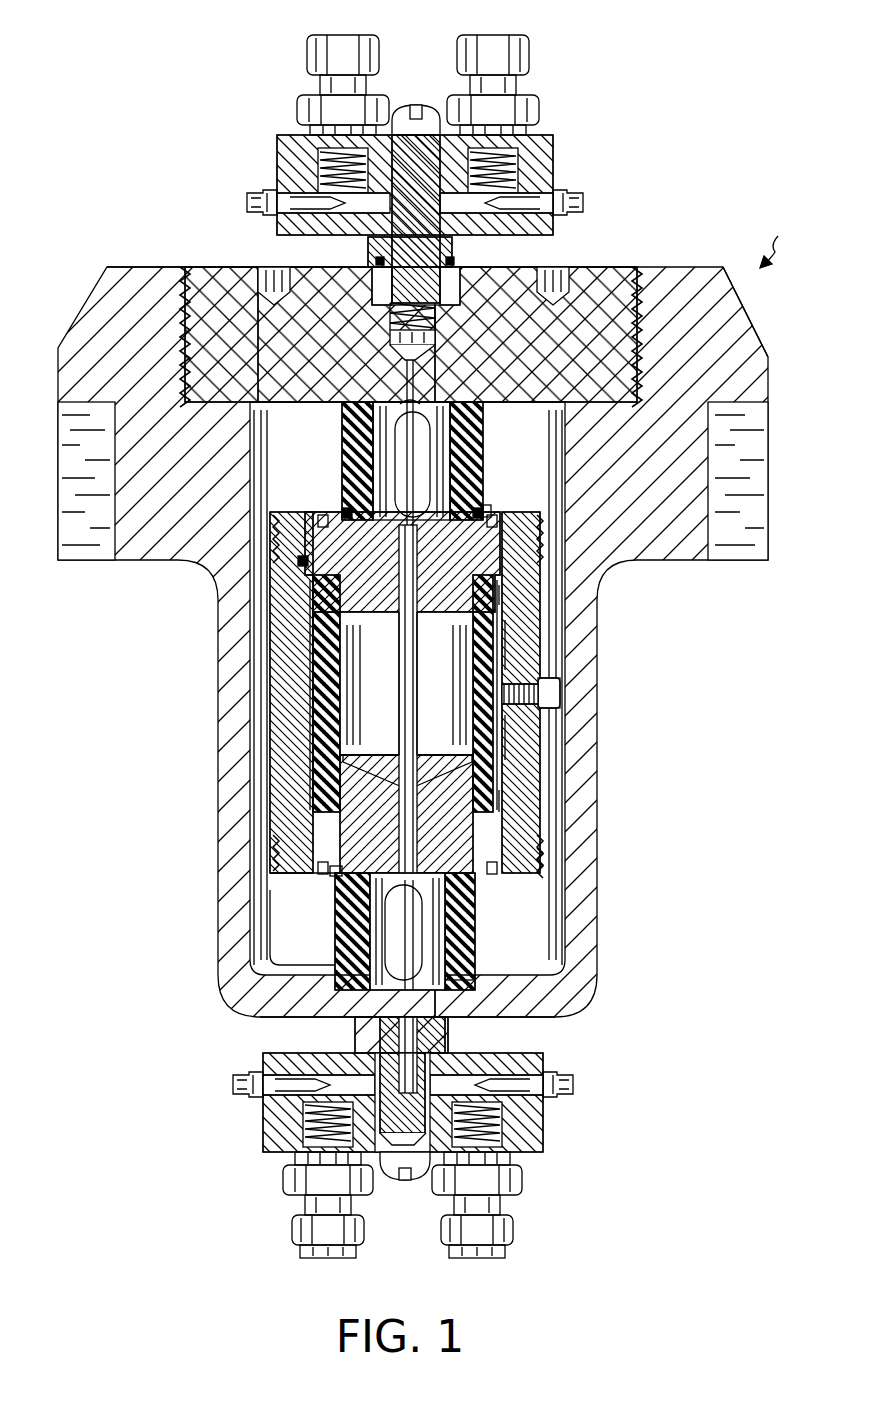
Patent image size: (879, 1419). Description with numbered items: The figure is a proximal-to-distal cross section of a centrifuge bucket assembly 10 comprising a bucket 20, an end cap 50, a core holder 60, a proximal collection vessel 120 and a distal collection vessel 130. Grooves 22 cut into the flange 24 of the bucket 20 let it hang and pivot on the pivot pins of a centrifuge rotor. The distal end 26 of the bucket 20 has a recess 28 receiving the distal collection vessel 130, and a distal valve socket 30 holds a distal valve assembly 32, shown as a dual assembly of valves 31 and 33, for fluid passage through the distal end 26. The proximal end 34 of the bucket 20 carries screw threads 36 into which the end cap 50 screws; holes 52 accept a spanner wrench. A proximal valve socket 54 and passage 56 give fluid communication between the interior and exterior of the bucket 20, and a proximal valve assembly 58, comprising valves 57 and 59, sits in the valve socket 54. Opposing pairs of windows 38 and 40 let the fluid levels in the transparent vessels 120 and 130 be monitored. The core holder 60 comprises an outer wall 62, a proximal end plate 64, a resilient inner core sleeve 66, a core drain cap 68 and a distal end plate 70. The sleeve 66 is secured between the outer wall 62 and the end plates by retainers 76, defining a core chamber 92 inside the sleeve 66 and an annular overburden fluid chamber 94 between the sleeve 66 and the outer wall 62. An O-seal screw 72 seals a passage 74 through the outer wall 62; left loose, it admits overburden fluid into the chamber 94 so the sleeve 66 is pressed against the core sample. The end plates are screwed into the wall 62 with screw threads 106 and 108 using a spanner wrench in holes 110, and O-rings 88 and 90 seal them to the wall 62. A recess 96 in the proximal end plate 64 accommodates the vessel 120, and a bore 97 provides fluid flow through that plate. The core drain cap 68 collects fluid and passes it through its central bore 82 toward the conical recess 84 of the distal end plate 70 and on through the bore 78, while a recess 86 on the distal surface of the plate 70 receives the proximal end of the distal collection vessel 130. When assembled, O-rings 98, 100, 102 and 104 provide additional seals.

The centrifuge bucket assembly 10 is at (775, 239).
The bucket 20 is at (748, 320).
The grooves 22 is at (766, 520).
The flange 24 is at (768, 384).
The distal end 26 is at (541, 1018).
The recess 28 is at (480, 1000).
The distal valve socket 30 is at (356, 1022).
The valve 31 is at (300, 1255).
The distal valve assembly 32 is at (265, 1058).
The valve 33 is at (505, 1255).
The proximal end 34 is at (147, 265).
The screw threads 36 is at (197, 248).
The windows 38 is at (342, 440).
The windows 40 is at (335, 925).
The end cap 50 is at (615, 266).
The holes 52 is at (272, 265).
The proximal valve socket 54 is at (445, 300).
The passage 56 is at (404, 386).
The valve 57 is at (366, 38).
The proximal valve assembly 58 is at (553, 138).
The valve 59 is at (511, 38).
The core holder 60 is at (555, 642).
The outer wall 62 is at (255, 730).
The proximal end plate 64 is at (535, 517).
The inner core sleeve 66 is at (340, 632).
The core drain cap 68 is at (418, 750).
The distal end plate 70 is at (268, 875).
The O-seal screw 72 is at (560, 694).
The passage 74 is at (500, 722).
The retainers 76 is at (494, 586).
The bore 78 is at (415, 828).
The central bore 82 is at (397, 758).
The conical recess 84 is at (402, 788).
The recess 86 is at (336, 884).
The O-ring 88 is at (302, 564).
The O-ring 90 is at (542, 832).
The core chamber 92 is at (418, 691).
The annular overburden fluid chamber 94 is at (338, 657).
The recess 96 is at (488, 494).
The bore 97 is at (411, 642).
The O-ring 98 is at (452, 404).
The O-ring 100 is at (342, 472).
The O-ring 102 is at (475, 922).
The O-ring 104 is at (475, 965).
The screw threads 106 is at (541, 542).
The screw threads 108 is at (541, 862).
The holes 110 is at (320, 515).
The proximal collection vessel 120 is at (484, 418).
The distal collection vessel 130 is at (335, 957).